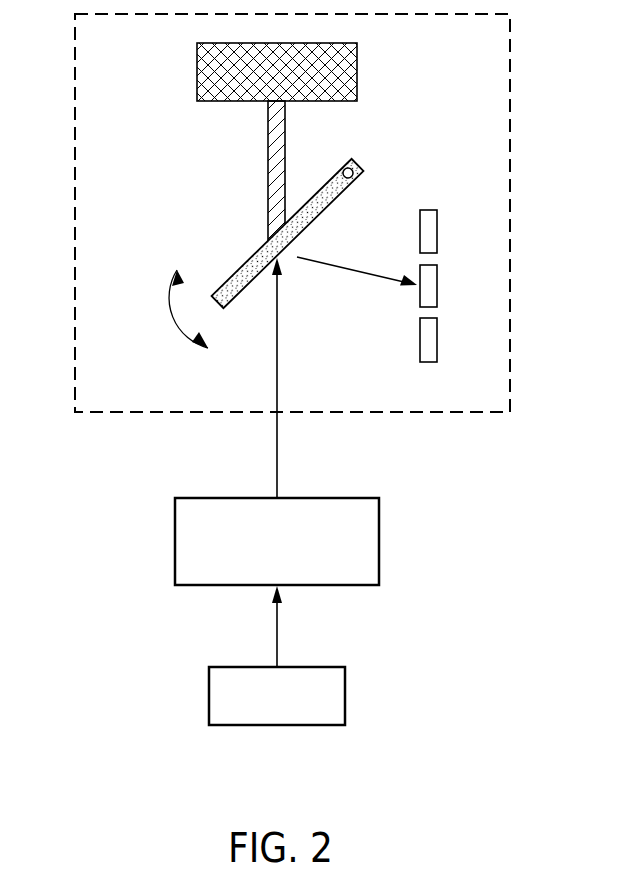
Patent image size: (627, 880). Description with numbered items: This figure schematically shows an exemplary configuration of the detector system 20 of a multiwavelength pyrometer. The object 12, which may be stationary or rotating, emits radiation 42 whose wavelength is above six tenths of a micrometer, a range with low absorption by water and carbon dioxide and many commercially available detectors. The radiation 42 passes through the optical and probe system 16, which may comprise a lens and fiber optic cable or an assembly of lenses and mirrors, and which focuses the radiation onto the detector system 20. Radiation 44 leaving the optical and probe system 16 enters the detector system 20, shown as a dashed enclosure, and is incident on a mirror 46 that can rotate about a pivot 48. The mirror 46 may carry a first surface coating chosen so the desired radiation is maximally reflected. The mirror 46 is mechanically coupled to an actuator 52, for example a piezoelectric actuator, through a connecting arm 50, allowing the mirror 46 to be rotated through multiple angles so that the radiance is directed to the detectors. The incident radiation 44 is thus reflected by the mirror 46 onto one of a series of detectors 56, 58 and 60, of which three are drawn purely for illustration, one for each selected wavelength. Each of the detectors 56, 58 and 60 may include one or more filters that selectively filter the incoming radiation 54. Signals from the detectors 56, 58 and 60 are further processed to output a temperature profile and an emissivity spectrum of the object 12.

The object 12 is at (345, 686).
The optical and probe system 16 is at (379, 540).
The detector system 20 is at (510, 150).
The radiation 42 is at (277, 636).
The radiation 44 is at (277, 448).
The mirror 46 is at (232, 282).
The pivot 48 is at (352, 162).
The connecting arm 50 is at (195, 75).
The actuator 52 is at (268, 157).
The incoming radiation 54 is at (348, 268).
The detector 56 is at (440, 231).
The detector 58 is at (440, 286).
The detector 60 is at (440, 338).